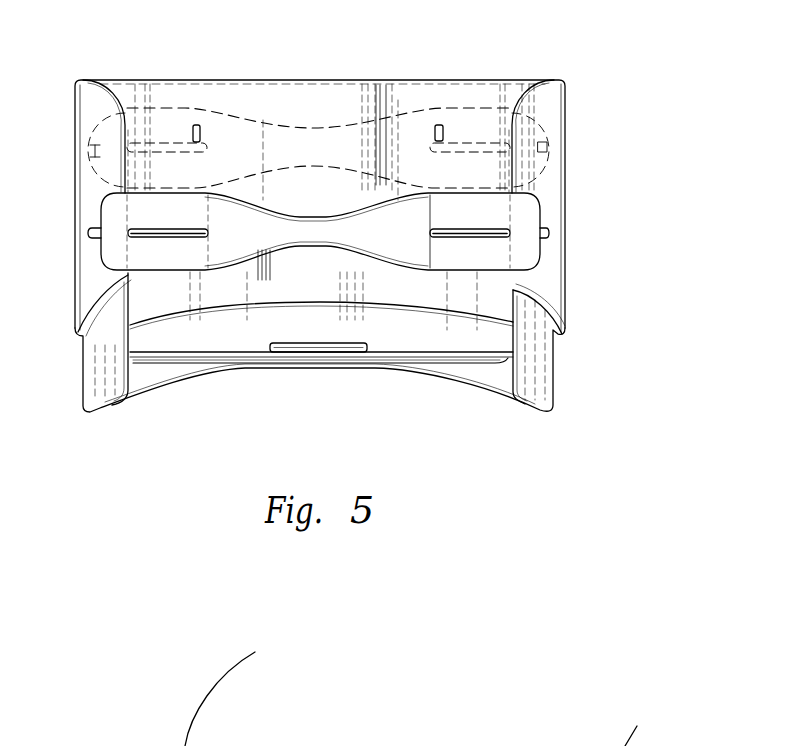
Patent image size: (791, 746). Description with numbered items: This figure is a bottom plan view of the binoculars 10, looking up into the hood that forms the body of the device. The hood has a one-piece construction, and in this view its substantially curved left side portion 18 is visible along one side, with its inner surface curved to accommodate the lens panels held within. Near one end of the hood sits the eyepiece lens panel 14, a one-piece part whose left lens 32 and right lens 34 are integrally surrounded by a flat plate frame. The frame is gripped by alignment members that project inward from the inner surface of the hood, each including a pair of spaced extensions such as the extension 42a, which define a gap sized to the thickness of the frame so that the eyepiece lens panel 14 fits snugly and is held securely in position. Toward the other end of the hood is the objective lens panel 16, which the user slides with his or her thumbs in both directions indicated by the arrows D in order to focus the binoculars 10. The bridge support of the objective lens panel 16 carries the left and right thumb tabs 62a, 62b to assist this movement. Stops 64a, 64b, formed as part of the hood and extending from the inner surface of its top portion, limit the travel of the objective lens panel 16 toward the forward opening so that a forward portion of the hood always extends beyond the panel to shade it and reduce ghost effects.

The binoculars 10 is at (523, 55).
The eyepiece lens panel 14 is at (390, 358).
The objective lens panel 16 is at (291, 214).
The left side portion 18 is at (557, 117).
The left lens 32 is at (450, 366).
The right lens 34 is at (192, 366).
The extension 42a is at (323, 343).
The left thumb tab 62a is at (143, 235).
The right thumb tab 62b is at (483, 236).
The stop 64a is at (197, 125).
The stop 64b is at (438, 125).
The direction arrow D is at (595, 229).